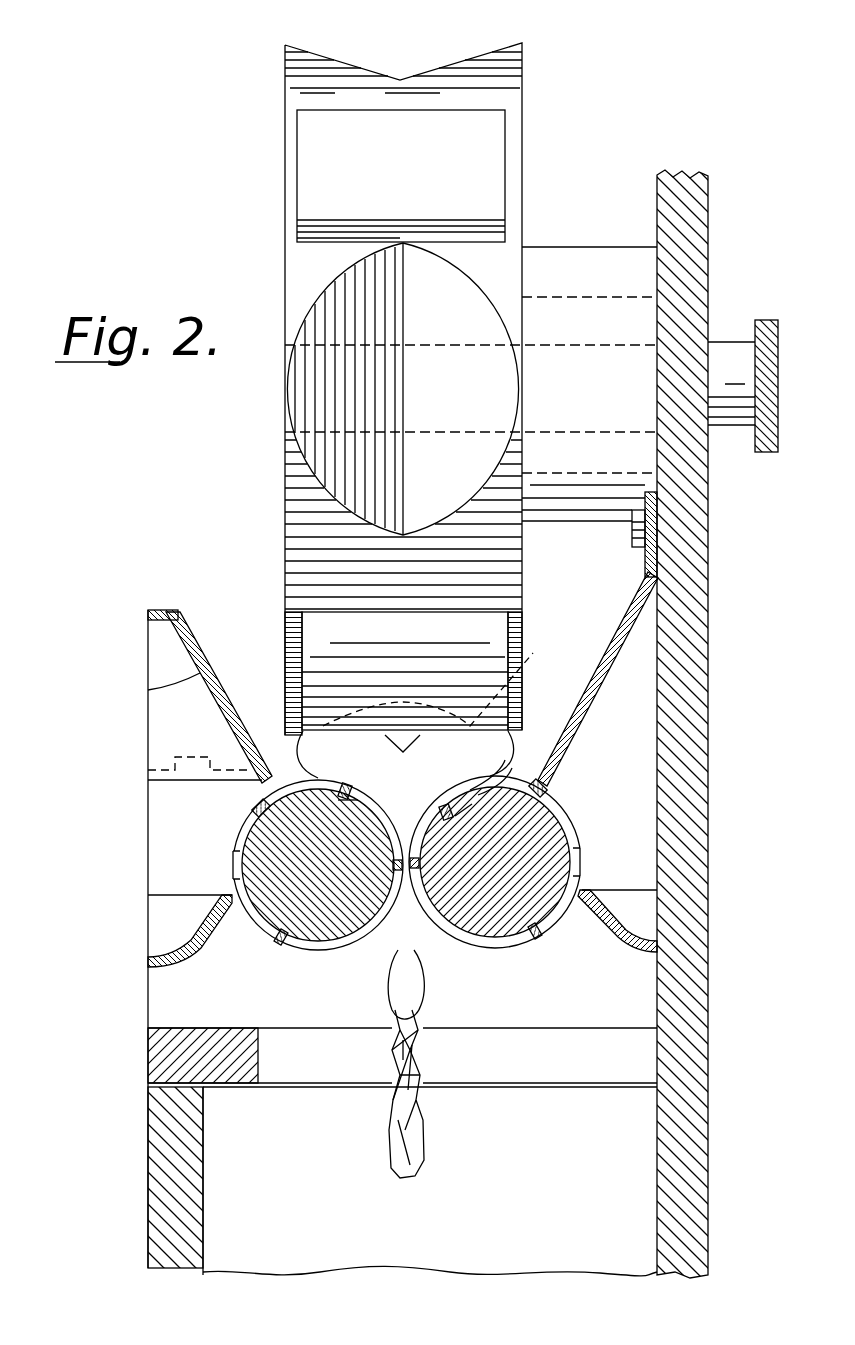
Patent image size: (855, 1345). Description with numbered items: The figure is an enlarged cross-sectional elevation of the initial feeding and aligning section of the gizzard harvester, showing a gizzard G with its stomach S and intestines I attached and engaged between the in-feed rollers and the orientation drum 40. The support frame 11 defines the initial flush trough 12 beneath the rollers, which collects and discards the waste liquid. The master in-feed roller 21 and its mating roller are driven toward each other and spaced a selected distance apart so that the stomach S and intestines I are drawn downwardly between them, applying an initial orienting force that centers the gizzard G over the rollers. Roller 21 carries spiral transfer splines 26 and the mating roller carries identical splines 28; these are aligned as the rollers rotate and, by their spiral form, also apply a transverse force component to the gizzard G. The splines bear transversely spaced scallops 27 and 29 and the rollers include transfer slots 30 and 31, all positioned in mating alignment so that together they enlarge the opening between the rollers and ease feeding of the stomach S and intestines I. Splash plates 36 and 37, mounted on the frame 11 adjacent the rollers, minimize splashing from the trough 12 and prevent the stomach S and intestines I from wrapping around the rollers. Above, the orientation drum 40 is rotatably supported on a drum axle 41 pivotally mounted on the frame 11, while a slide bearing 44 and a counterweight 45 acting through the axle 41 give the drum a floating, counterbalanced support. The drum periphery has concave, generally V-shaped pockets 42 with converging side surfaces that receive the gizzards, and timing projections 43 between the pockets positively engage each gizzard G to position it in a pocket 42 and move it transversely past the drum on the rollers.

The support frame 11 is at (700, 656).
The initial flush trough 12 is at (518, 1185).
The in-feed roller 21 is at (548, 830).
The spiral transfer splines 26 is at (542, 793).
The scallops 27 is at (580, 858).
The spiral transfer splines 28 is at (280, 797).
The scallops 29 is at (236, 858).
The transfer slots 30 is at (469, 808).
The transfer slots 31 is at (358, 812).
The splash plate 36 is at (612, 638).
The splash plate 37 is at (205, 680).
The orientation drum 40 is at (283, 82).
The drum axle 41 is at (725, 342).
The pockets 42 is at (420, 76).
The timing projections 43 is at (296, 163).
The slide bearing 44 is at (580, 255).
The counterweight 45 is at (773, 452).
The gizzard G is at (374, 769).
The stomach S is at (412, 980).
The intestines I is at (403, 1066).